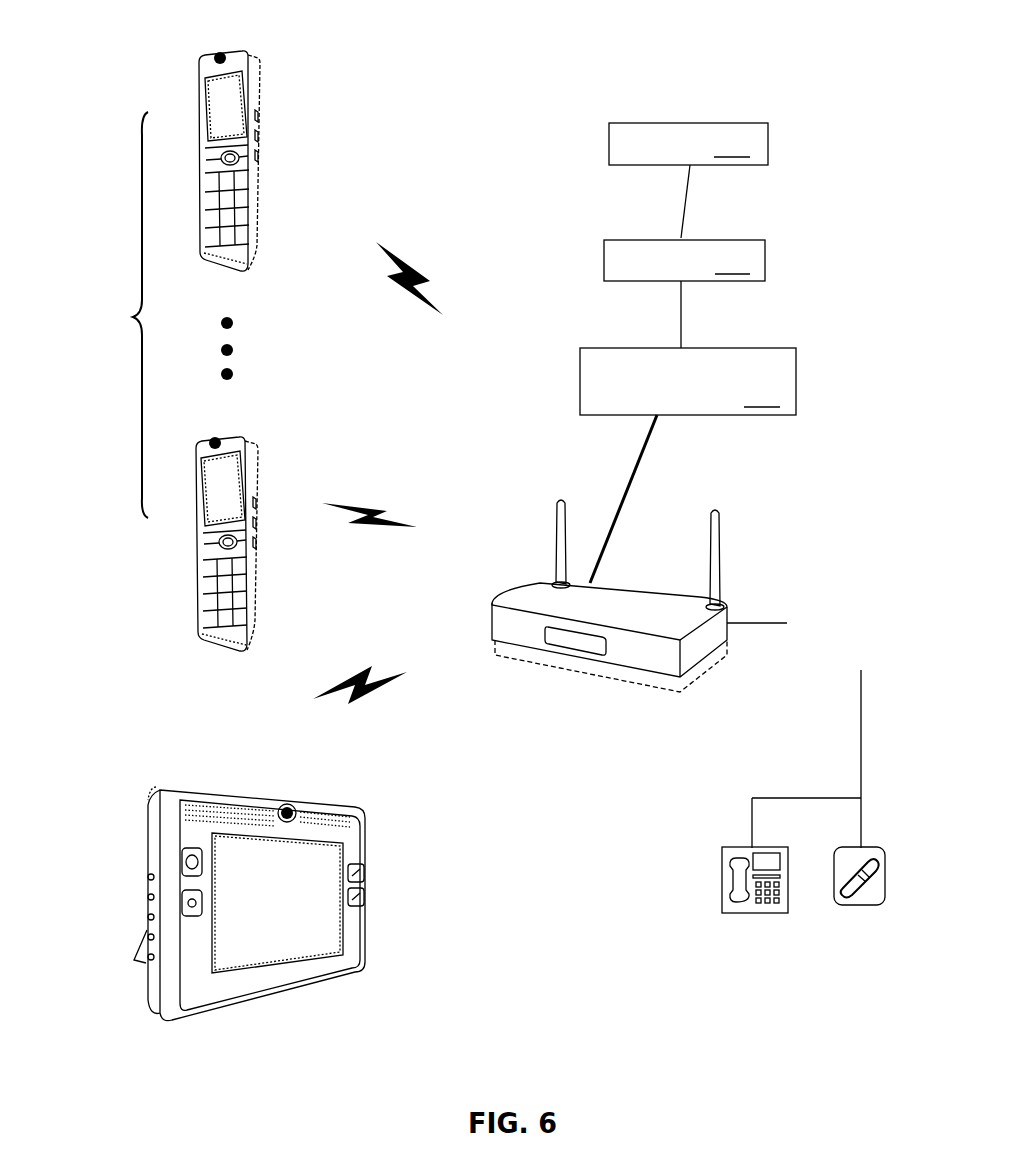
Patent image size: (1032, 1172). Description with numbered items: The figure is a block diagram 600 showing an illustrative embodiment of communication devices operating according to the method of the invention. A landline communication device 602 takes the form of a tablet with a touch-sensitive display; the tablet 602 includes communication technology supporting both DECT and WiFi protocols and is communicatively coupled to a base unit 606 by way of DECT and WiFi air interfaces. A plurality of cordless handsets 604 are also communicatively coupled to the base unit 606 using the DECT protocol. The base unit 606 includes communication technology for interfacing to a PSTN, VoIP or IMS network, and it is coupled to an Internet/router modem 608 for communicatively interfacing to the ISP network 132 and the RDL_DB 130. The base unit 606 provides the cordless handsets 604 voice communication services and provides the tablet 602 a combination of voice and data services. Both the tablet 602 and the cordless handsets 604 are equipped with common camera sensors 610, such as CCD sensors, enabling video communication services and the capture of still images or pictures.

The block diagram 600 is at (480, 590).
The landline communication device (tablet) 602 is at (171, 786).
The cordless handsets 604 is at (256, 466).
The base unit 606 is at (680, 692).
The Internet/router modem 608 is at (688, 381).
The camera sensors 610 is at (216, 443).
The RDL_DB 130 is at (688, 144).
The ISP network 132 is at (684, 260).